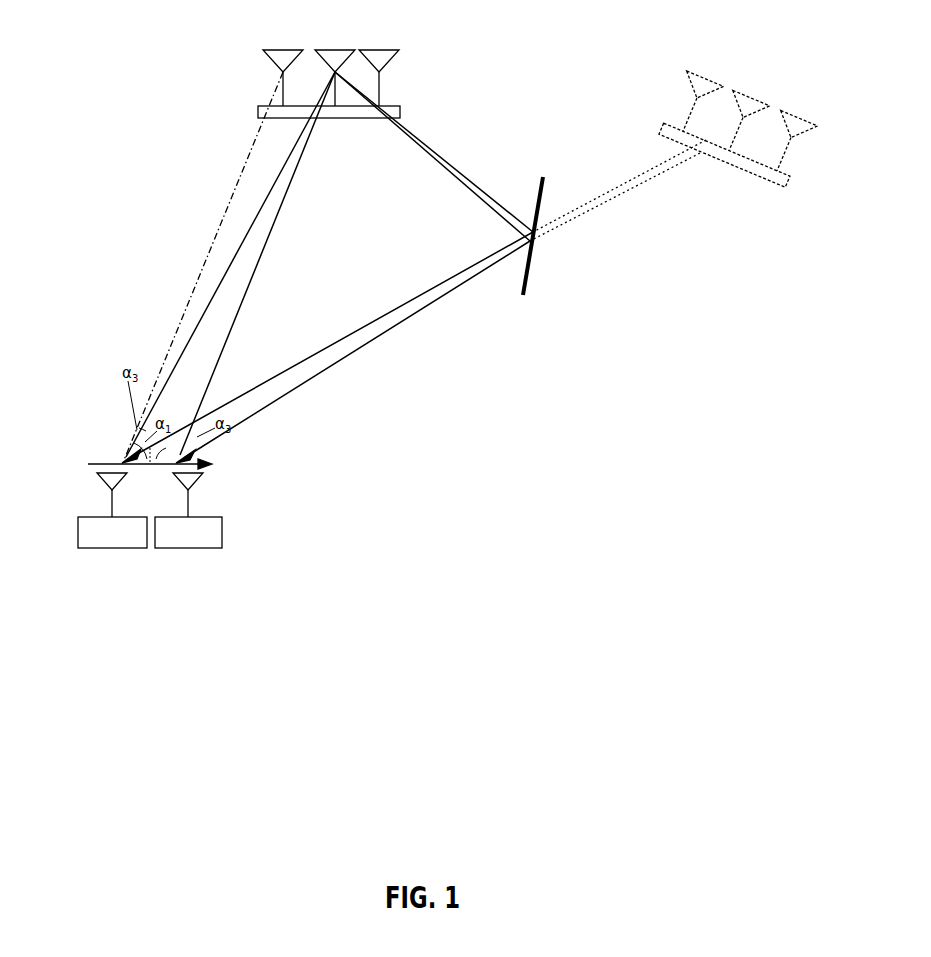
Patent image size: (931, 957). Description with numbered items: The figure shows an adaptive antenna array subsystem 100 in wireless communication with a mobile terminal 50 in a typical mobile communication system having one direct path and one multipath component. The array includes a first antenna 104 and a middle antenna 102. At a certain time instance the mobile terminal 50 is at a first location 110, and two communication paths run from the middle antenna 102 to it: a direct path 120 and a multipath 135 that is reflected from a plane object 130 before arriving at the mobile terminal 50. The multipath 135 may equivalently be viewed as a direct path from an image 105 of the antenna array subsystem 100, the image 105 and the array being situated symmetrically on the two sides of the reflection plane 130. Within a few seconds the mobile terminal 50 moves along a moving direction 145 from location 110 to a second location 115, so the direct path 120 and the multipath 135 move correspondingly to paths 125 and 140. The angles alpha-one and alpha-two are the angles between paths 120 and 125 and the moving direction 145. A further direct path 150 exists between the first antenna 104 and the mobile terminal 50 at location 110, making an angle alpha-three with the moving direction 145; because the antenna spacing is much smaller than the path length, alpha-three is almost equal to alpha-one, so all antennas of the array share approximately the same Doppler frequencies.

The mobile terminal 50 is at (117, 557).
The adaptive antenna array subsystem 100 is at (388, 80).
The middle antenna 102 is at (342, 24).
The first antenna 104 is at (265, 58).
The image of AAS 105 is at (663, 113).
The location of MT 110 is at (92, 512).
The location of MT 115 is at (198, 498).
The direct path 120 is at (192, 333).
The direct path 125 is at (227, 345).
The plane object 130 is at (548, 182).
The multipath 135 is at (368, 322).
The multipath 140 is at (413, 320).
The moving direction 145 is at (103, 463).
The direct path 150 is at (208, 252).